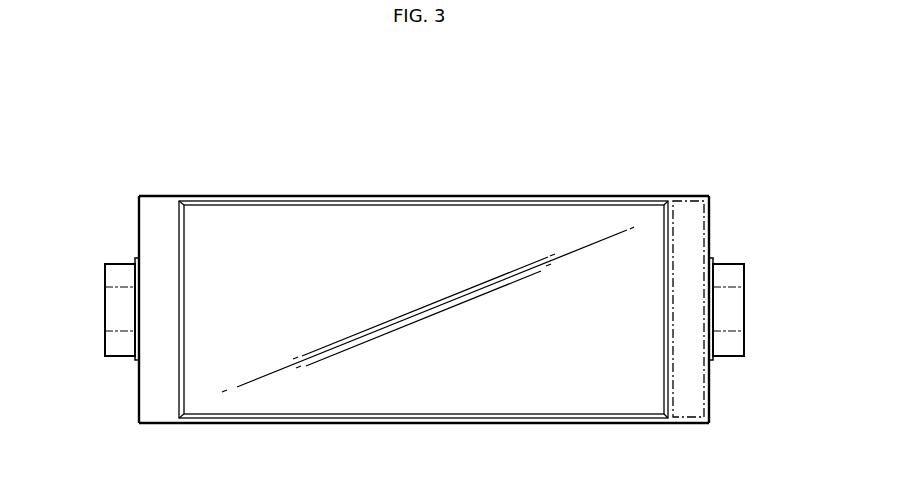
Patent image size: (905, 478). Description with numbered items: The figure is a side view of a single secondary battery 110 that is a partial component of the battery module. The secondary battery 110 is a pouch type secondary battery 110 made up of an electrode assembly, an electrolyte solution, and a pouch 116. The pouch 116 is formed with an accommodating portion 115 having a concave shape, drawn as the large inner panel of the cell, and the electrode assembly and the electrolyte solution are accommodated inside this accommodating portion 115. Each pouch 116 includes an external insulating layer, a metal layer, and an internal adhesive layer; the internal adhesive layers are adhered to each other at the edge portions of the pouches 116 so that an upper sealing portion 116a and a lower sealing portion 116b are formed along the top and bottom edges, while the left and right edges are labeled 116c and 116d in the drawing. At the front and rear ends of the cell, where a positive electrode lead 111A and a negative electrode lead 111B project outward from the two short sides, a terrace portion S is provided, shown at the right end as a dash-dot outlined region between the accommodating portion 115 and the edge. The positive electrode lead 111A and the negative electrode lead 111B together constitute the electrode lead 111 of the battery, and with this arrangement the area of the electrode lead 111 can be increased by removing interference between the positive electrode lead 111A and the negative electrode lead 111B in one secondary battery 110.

The secondary battery 110 is at (212, 128).
The electrode lead 111 is at (600, 65).
The positive electrode lead 111A is at (87, 311).
The negative electrode lead 111B is at (761, 311).
The accommodating portion 115 is at (270, 235).
The pouch 116 is at (162, 196).
The upper sealing portion 116a is at (441, 196).
The lower sealing portion 116b is at (441, 423).
The left side of case 116c is at (139, 228).
The right side of case 116d is at (709, 228).
The terrace portion S is at (686, 201).